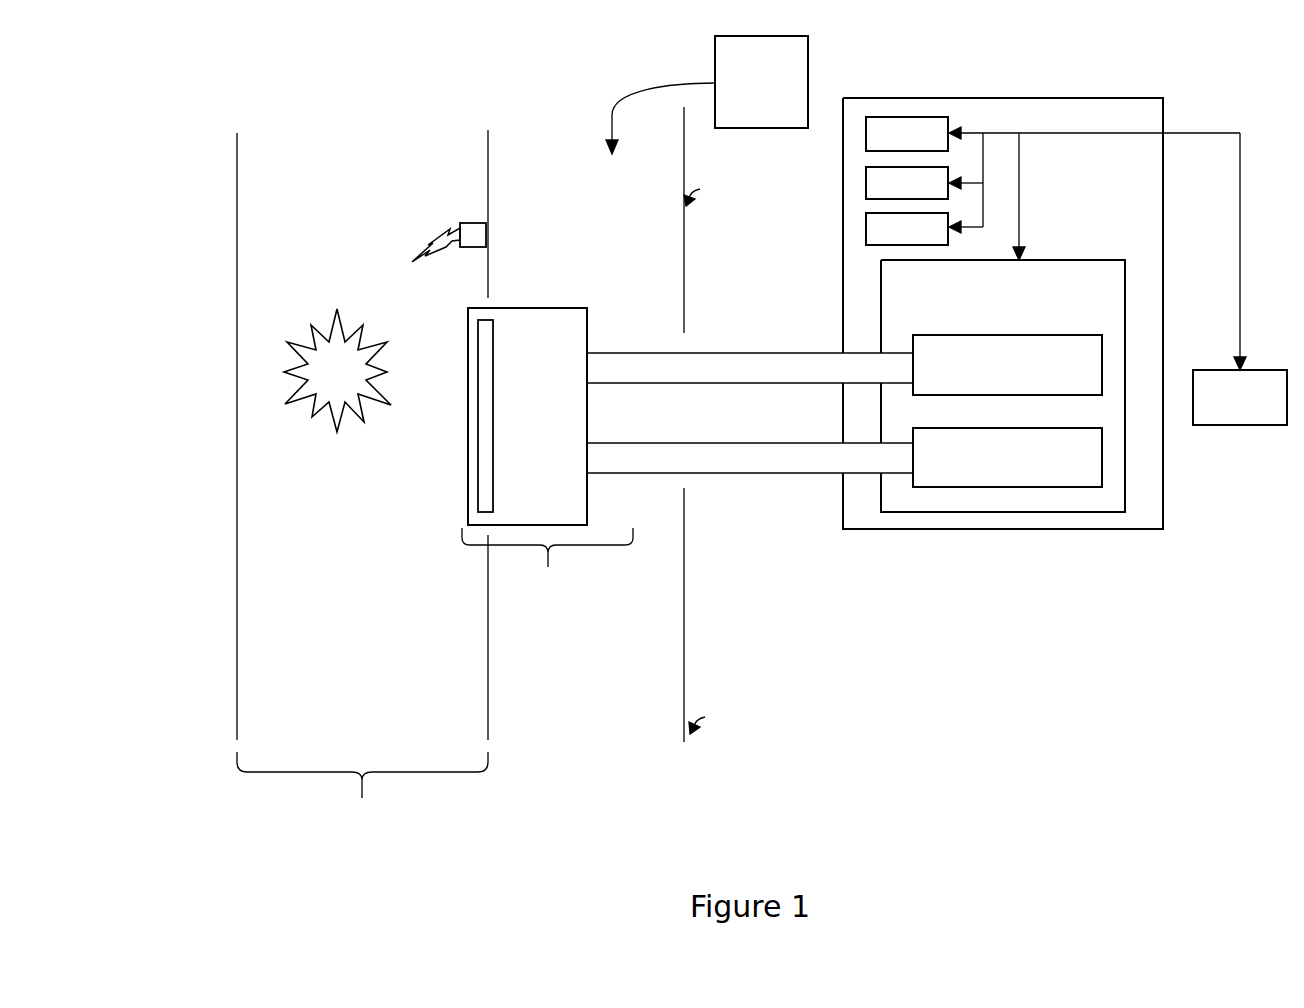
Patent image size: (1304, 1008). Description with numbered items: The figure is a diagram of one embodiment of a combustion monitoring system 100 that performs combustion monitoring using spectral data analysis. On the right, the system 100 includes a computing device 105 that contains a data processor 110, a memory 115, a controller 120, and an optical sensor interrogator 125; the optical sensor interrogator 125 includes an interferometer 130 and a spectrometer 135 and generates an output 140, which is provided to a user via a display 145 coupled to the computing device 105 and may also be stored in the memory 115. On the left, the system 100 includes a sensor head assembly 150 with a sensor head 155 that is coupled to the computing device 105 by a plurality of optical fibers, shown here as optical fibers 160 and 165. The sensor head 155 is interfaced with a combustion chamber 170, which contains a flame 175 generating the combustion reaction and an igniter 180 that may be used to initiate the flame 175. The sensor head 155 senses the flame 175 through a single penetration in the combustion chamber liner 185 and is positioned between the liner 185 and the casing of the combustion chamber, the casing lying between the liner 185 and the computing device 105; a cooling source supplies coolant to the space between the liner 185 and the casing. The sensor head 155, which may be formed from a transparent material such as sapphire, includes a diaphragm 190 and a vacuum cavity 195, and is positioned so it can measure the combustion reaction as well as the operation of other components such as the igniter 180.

The combustion monitoring system 100 is at (248, 44).
The computing device 105 is at (1150, 90).
The data processor 110 is at (907, 134).
The memory 115 is at (907, 183).
The controller 120 is at (907, 229).
The optical sensor interrogator 125 is at (1003, 386).
The interferometer 130 is at (1007, 365).
The spectrometer 135 is at (1007, 457).
The output 140 is at (1097, 248).
The display 145 is at (1240, 397).
The sensor head assembly 150 is at (523, 435).
The sensor head 155 is at (591, 318).
The optical fiber 160 is at (750, 368).
The optical fiber 165 is at (750, 458).
The combustion chamber 170 is at (362, 484).
The flame 175 is at (337, 370).
The igniter 180 is at (480, 216).
The combustion chamber liner 185 is at (494, 116).
The diaphragm 190 is at (456, 423).
The vacuum cavity 195 is at (500, 472).